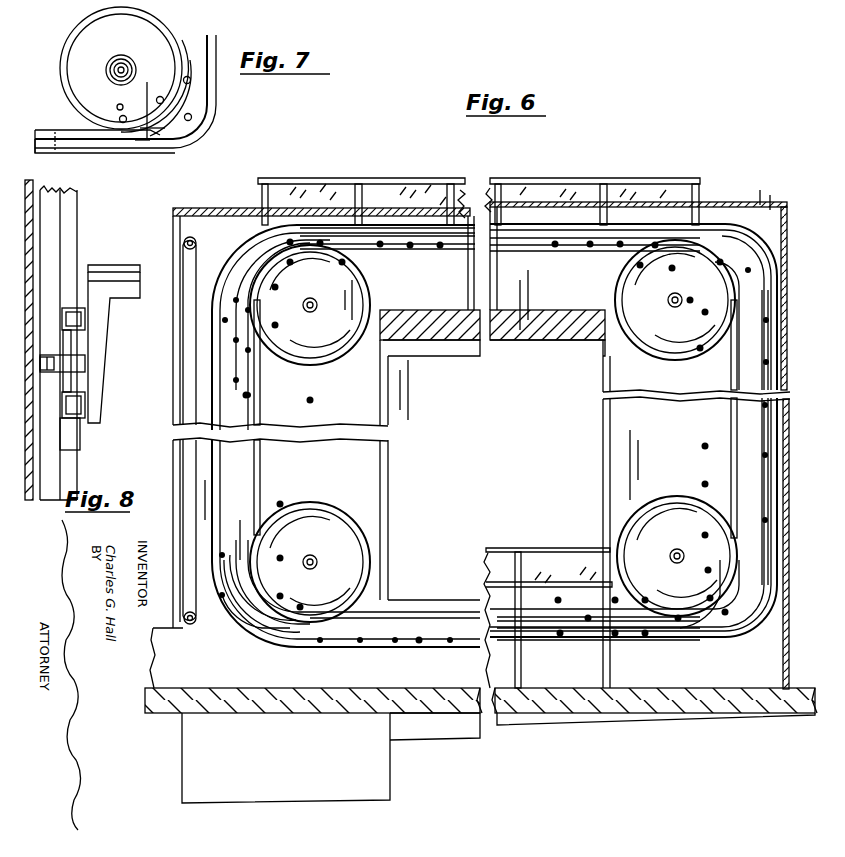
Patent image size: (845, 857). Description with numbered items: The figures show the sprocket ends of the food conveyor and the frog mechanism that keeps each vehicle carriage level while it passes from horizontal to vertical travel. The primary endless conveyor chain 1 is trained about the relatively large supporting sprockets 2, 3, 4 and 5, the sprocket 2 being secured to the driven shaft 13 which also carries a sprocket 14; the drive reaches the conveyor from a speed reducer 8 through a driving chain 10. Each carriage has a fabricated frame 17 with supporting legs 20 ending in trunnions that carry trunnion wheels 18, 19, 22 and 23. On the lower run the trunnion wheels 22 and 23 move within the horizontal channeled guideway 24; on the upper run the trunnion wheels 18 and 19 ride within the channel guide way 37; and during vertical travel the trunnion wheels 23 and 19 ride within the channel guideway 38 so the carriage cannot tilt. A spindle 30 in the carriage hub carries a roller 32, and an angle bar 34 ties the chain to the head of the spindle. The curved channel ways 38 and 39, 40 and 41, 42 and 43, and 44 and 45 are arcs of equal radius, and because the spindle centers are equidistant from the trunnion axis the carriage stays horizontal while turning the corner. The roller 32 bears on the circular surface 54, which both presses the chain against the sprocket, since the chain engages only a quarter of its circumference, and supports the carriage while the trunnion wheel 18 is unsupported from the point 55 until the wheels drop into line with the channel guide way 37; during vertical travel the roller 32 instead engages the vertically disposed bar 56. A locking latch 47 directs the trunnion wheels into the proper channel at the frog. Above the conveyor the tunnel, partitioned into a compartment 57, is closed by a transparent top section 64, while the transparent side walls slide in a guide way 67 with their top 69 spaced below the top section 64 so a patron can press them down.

In FIG. 7, the primary endless conveyor chain 1 is at (180, 38).
In FIG. 6, the primary endless conveyor chain 1 is at (470, 252).
In FIG. 6, the supporting sprocket 2 is at (372, 548).
In FIG. 6, the supporting sprocket 3 is at (325, 348).
In FIG. 6, the supporting sprocket 4 is at (668, 352).
In FIG. 7, the supporting sprocket 5 is at (70, 78).
In FIG. 6, the supporting sprocket 5 is at (642, 522).
In FIG. 7, the speed reducer 8 is at (162, 84).
In FIG. 6, the driving chain 10 is at (222, 600).
In FIG. 6, the driven shaft 13 is at (318, 562).
In FIG. 6, the sprocket 14 is at (318, 298).
In FIG. 8, the fabricated frame 17 is at (98, 324).
In FIG. 7, the trunnion wheel 18 is at (122, 123).
In FIG. 8, the trunnion wheel 18 is at (86, 405).
In FIG. 6, the trunnion wheel 18 is at (292, 265).
In FIG. 7, the trunnion wheel 19 is at (190, 120).
In FIG. 6, the trunnion wheel 19 is at (278, 326).
In FIG. 8, the supporting leg 20 is at (102, 385).
In FIG. 7, the trunnion wheel 22 is at (120, 110).
In FIG. 8, the trunnion wheel 22 is at (86, 333).
In FIG. 6, the trunnion wheel 22 is at (300, 230).
In FIG. 7, the trunnion wheel 23 is at (190, 82).
In FIG. 6, the trunnion wheel 23 is at (360, 228).
In FIG. 6, the channeled guideway 24 is at (420, 236).
In FIG. 7, the spindle 30 is at (170, 146).
In FIG. 6, the spindle 30 is at (320, 248).
In FIG. 7, the roller 32 is at (163, 101).
In FIG. 8, the roller 32 is at (62, 318).
In FIG. 6, the roller 32 is at (678, 622).
In FIG. 6, the angle bar 34 is at (600, 255).
In FIG. 7, the channel guide way 37 is at (50, 150).
In FIG. 8, the channel guide way 37 is at (82, 440).
In FIG. 6, the channel guide way 37 is at (584, 642).
In FIG. 6, the channel guideway 38 is at (240, 235).
In FIG. 6, the channel way 39 is at (240, 262).
In FIG. 6, the channel way 40 is at (760, 250).
In FIG. 6, the channel way 41 is at (770, 262).
In FIG. 6, the channel guideway 42 is at (760, 600).
In FIG. 6, the channel guideway 43 is at (765, 612).
In FIG. 6, the channel way 44 is at (228, 622).
In FIG. 6, the channel way 45 is at (254, 626).
In FIG. 6, the locking latch 47 is at (250, 300).
In FIG. 7, the circular surface 54 is at (155, 140).
In FIG. 8, the circular surface 54 is at (86, 363).
In FIG. 6, the circular surface 54 is at (300, 628).
In FIG. 7, the point 55 is at (143, 142).
In FIG. 6, the vertically disposed bar 56 is at (262, 485).
In FIG. 6, the compartment 57 is at (630, 186).
In FIG. 6, the top section 64 is at (330, 182).
In FIG. 6, the guide way 67 is at (405, 188).
In FIG. 6, the top of transparent side wall member 69 is at (462, 182).